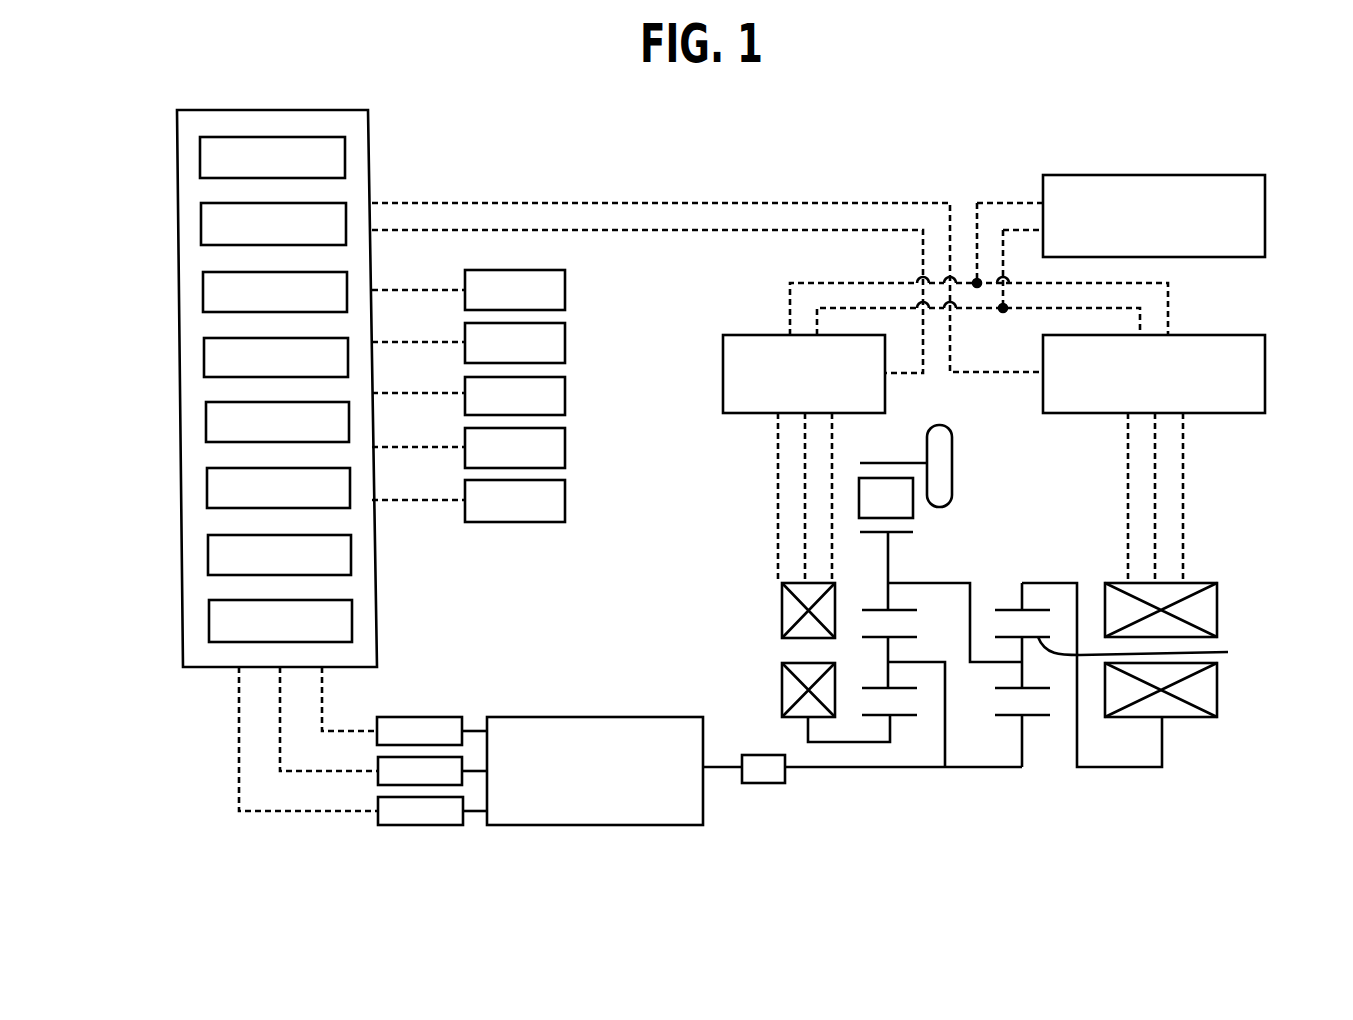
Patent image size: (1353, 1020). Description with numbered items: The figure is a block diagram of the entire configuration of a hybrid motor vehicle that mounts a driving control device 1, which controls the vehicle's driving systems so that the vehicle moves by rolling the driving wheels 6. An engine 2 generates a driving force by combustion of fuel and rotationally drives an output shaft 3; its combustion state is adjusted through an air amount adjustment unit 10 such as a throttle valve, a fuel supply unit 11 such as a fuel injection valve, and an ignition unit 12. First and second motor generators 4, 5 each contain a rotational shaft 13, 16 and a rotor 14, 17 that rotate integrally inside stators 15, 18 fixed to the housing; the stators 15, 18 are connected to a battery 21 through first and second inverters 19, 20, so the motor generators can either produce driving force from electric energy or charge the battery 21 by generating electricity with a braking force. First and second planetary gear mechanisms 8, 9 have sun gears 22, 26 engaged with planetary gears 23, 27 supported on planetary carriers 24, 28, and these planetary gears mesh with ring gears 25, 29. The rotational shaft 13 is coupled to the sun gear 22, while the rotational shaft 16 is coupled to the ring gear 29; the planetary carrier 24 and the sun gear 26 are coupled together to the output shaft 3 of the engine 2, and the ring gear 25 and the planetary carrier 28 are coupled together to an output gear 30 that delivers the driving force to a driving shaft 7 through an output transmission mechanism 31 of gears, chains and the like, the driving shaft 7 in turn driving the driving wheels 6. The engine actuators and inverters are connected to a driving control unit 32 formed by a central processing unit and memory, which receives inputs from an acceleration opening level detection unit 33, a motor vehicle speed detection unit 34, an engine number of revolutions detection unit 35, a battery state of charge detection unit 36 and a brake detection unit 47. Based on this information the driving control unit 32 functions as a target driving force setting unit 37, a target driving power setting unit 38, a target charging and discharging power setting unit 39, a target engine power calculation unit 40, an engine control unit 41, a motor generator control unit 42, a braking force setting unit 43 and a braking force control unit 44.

The driving control device 1 is at (1013, 131).
The engine 2 is at (598, 717).
The output shaft 3 is at (722, 770).
The first motor generator 4 is at (763, 577).
The second motor generator 5 is at (1208, 575).
The driving wheels 6 is at (952, 450).
The driving shaft 7 is at (866, 463).
The first planetary gear mechanism 8 is at (931, 574).
The second planetary gear mechanism 9 is at (1046, 570).
The air amount adjustment unit 10 is at (420, 717).
The fuel supply unit 11 is at (378, 760).
The ignition unit 12 is at (378, 800).
The rotational shaft 13 is at (845, 768).
The rotor 14 is at (782, 688).
The stator 15 is at (782, 610).
The rotational shaft 16 is at (1118, 768).
The rotor 17 is at (1217, 683).
The stator 18 is at (1217, 603).
The first inverter 19 is at (762, 335).
The second inverter 20 is at (1202, 335).
The battery 21 is at (1153, 175).
The sun gear 22 is at (900, 716).
The planetary gears 23 is at (862, 640).
The planetary carrier 24 is at (925, 660).
The ring gear 25 is at (878, 608).
The sun gear 26 is at (1037, 720).
The planetary gears 27 is at (1132, 650).
The planetary carrier 28 is at (988, 666).
The ring gear 29 is at (1012, 608).
The output gear 30 is at (888, 541).
The output transmission mechanism 31 is at (859, 496).
The driving control unit 32 is at (268, 108).
The acceleration opening level detection unit 33 is at (565, 290).
The motor vehicle speed detection unit 34 is at (565, 342).
The engine number of revolutions detection unit 35 is at (565, 393).
The battery state of charge detection unit 36 is at (565, 447).
The target driving force setting unit 37 is at (200, 158).
The target driving power setting unit 38 is at (201, 225).
The target charging and discharging power setting unit 39 is at (203, 293).
The target engine power calculation unit 40 is at (204, 359).
The engine control unit 41 is at (206, 424).
The motor generator control unit 42 is at (207, 490).
The braking force setting unit 43 is at (208, 557).
The braking force control unit 44 is at (209, 623).
The brake detection unit 47 is at (565, 500).